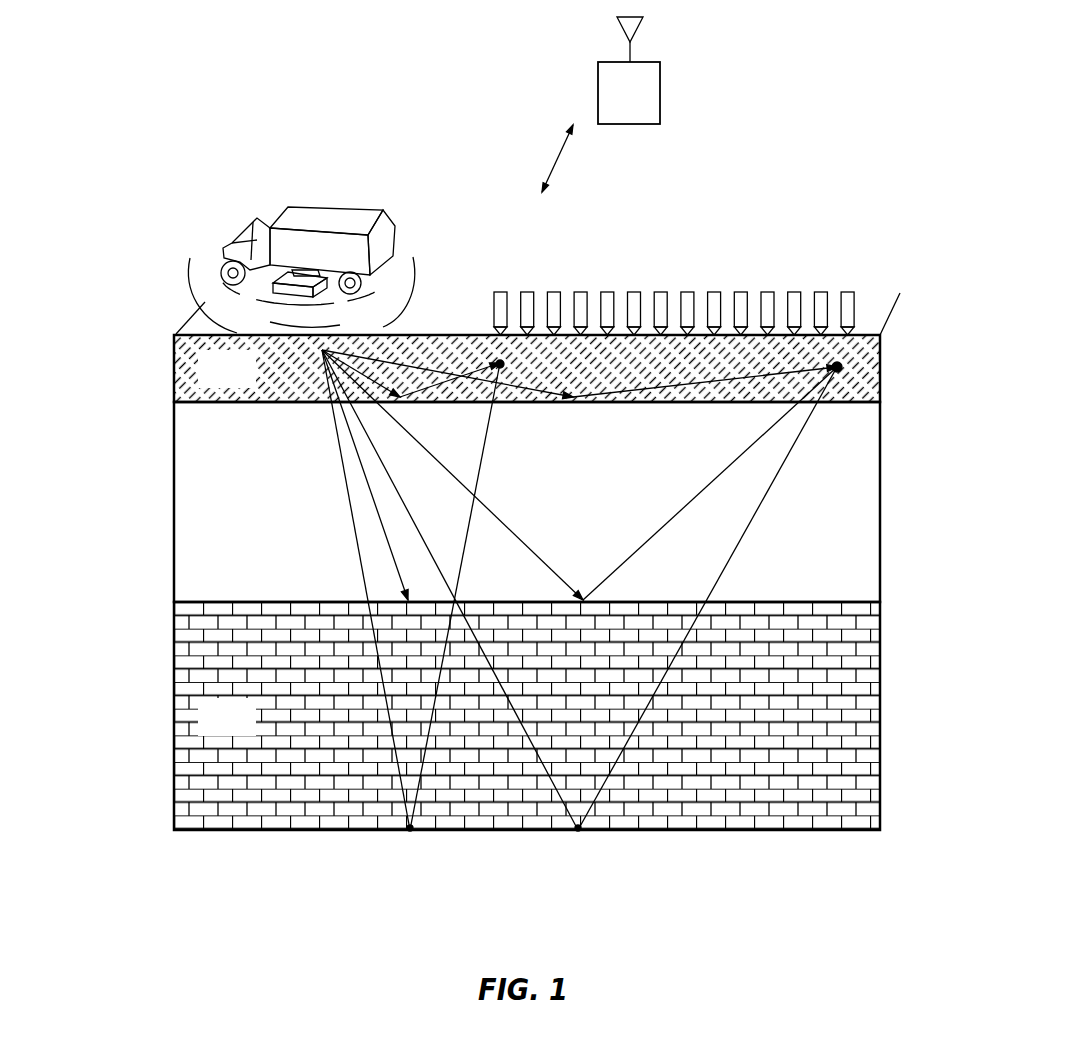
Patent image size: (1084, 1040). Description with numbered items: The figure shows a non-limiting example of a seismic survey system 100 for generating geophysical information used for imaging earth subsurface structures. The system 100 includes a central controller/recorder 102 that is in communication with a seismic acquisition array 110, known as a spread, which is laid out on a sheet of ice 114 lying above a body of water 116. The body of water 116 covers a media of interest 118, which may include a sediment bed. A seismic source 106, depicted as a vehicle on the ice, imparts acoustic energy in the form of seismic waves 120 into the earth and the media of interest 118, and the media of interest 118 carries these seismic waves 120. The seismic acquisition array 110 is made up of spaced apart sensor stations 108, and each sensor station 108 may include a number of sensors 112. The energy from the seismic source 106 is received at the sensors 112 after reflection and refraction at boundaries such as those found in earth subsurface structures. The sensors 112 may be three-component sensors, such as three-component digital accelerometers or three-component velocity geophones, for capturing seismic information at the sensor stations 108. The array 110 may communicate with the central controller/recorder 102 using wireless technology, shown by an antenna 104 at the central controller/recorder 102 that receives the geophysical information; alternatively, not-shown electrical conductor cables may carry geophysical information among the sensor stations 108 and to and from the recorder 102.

The seismic survey system 100 is at (420, 105).
The central controller/recorder 102 is at (660, 92).
The antenna 104 is at (640, 30).
The seismic source 106 is at (397, 215).
The sensor station 108 is at (537, 274).
The seismic acquisition array 110 is at (674, 265).
The sensor 112 is at (502, 292).
The sheet of ice 114 is at (192, 313).
The body of water 116 is at (252, 518).
The media of interest 118 is at (252, 731).
The seismic waves 120 is at (425, 768).